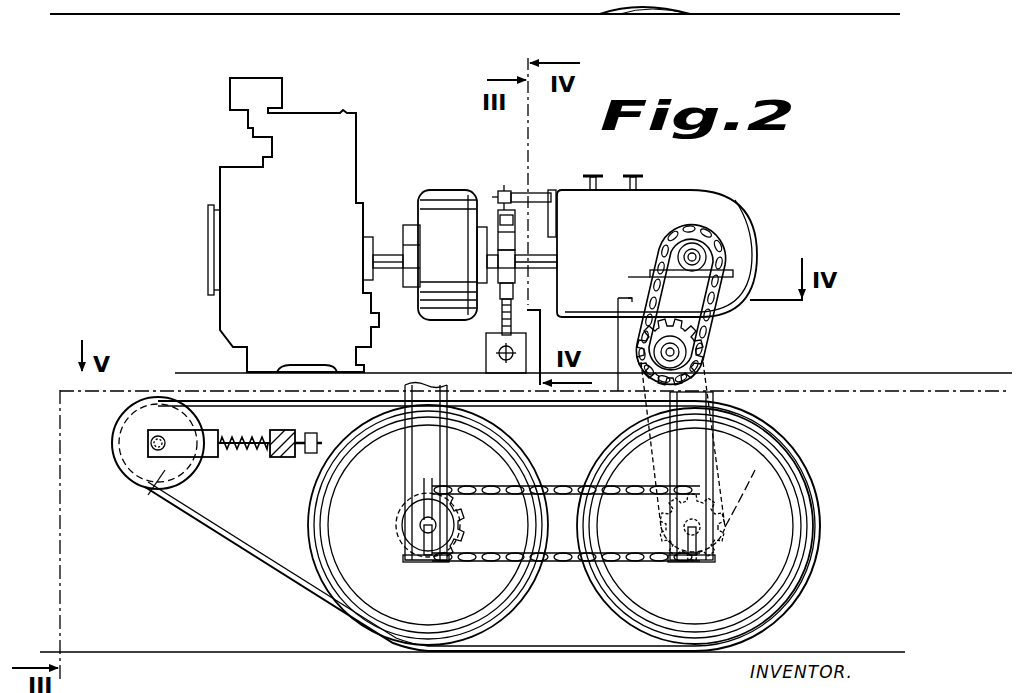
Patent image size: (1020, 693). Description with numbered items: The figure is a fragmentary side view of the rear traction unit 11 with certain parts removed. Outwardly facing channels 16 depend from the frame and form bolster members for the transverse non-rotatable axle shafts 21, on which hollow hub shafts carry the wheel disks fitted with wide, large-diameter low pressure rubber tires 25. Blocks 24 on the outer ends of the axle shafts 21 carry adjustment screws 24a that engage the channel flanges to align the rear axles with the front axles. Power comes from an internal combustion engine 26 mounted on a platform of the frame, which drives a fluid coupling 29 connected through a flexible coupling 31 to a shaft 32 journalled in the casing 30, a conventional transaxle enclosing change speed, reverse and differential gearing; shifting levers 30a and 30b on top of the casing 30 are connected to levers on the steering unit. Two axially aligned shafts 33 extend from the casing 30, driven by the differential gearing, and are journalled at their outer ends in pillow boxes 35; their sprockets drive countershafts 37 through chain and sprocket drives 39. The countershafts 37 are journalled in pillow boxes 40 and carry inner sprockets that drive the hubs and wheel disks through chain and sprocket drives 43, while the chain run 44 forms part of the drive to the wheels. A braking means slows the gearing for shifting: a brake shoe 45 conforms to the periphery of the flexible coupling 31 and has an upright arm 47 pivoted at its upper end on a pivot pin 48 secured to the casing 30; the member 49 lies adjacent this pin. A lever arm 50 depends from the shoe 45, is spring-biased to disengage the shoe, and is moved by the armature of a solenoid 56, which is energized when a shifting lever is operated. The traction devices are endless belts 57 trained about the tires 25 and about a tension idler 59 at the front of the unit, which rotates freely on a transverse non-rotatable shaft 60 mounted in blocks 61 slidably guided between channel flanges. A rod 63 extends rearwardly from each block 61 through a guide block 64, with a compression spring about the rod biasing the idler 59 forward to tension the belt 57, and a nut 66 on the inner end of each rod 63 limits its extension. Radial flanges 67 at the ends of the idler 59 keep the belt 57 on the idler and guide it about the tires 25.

The rear traction unit 11 is at (198, 365).
The outwardly facing channels 16 is at (405, 428).
The non-rotatable axle shafts 21 is at (425, 556).
The blocks 24 is at (420, 490).
The adjustment screws 24a is at (440, 490).
The low pressure rubber tires 25 is at (500, 578).
The internal combustion engine 26 is at (356, 172).
The fluid coupling 29 is at (440, 196).
The casing 30 is at (718, 205).
The shifting lever 30a is at (645, 172).
The shifting lever 30b is at (598, 174).
The flexible coupling 31 is at (520, 236).
The shaft 32 is at (527, 252).
The axially aligned shafts 33 is at (700, 250).
The pillow boxes 35 is at (703, 258).
The countershafts 37 is at (688, 348).
The chain and sprocket drives 39 is at (706, 340).
The pillow boxes 40 is at (690, 315).
The chain and sprocket drives 43 is at (760, 432).
The drive chain upper run 44 is at (555, 482).
The brake shoe 45 is at (497, 275).
The upright arm 47 is at (504, 192).
The pivot pin 48 is at (533, 196).
The shift plate 49 is at (553, 193).
The lever arm 50 is at (497, 312).
The solenoid 56 is at (488, 352).
The endless belts 57 is at (265, 563).
The tension idler 59 is at (185, 466).
The transverse non-rotatable shaft 60 is at (150, 432).
The blocks 61 is at (210, 432).
The rod 63 is at (250, 452).
The guide blocks 64 is at (275, 452).
The nut 66 is at (310, 432).
The radial flanges 67 is at (165, 500).